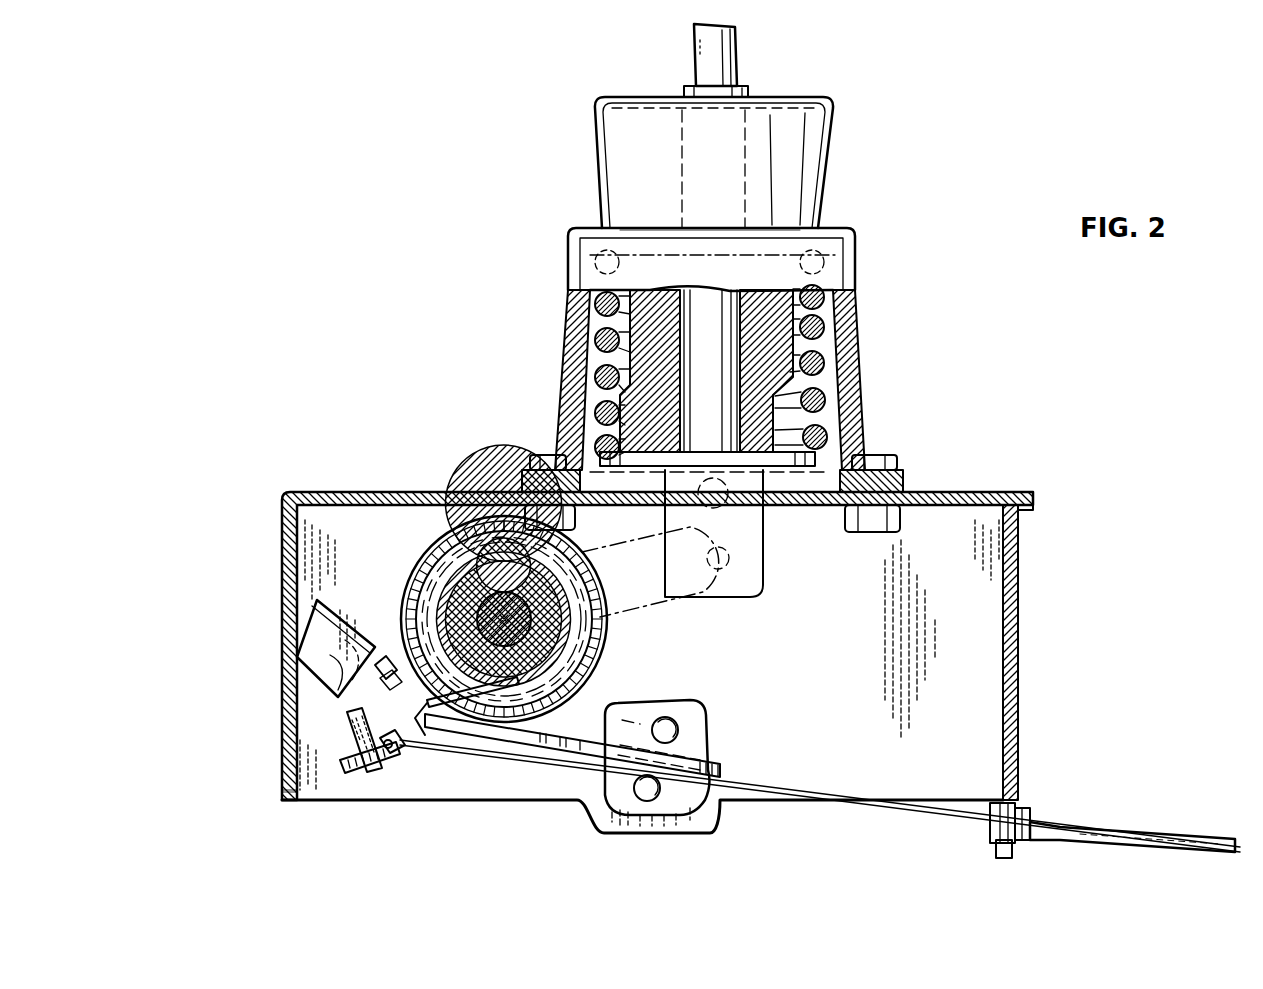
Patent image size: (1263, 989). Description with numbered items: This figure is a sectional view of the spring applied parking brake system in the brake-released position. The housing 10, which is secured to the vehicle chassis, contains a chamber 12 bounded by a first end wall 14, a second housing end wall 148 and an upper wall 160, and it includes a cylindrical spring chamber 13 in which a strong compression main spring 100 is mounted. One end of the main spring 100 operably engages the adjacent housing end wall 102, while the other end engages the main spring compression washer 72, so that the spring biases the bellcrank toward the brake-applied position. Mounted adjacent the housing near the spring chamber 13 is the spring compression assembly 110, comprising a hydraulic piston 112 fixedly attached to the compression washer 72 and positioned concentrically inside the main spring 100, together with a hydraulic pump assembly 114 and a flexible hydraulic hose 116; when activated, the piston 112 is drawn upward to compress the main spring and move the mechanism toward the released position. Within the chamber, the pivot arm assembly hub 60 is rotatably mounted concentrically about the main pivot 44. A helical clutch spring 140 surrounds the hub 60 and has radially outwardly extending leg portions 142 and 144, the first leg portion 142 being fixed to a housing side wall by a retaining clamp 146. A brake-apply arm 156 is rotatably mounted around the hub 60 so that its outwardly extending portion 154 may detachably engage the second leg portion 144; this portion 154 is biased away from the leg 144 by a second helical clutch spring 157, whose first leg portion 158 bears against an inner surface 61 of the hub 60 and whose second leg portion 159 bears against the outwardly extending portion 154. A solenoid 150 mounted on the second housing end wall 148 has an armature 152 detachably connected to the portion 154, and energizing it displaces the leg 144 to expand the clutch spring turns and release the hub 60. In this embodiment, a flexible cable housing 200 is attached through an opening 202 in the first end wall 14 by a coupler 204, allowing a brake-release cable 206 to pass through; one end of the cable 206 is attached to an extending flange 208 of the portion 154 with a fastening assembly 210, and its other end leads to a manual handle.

The housing 10 is at (283, 773).
The chamber 12 is at (975, 595).
The cylindrical spring chamber 13 is at (828, 388).
The first end wall 14 is at (1018, 648).
The main pivot 44 is at (590, 668).
The pivot arm assembly hub 60 is at (400, 590).
The inner surface 61 is at (418, 560).
The main spring compression washer 72 is at (825, 455).
The main spring 100 is at (825, 330).
The housing end wall 102 is at (592, 267).
The spring compression assembly 110 is at (585, 190).
The hydraulic piston 112 is at (690, 362).
The hydraulic pump assembly 114 is at (800, 100).
The flexible hydraulic hose 116 is at (740, 55).
The helical clutch spring 140 is at (605, 640).
The first leg portion 142 is at (563, 745).
The second leg portion 144 is at (343, 770).
The retaining clamp 146 is at (690, 728).
The second housing end wall 148 is at (310, 800).
The solenoid 150 is at (327, 652).
The armature 152 is at (327, 687).
The outwardly extending portion 154 is at (352, 713).
The brake-apply arm 156 is at (403, 617).
The second helical clutch spring 157 is at (588, 542).
The first leg portion 158 is at (477, 548).
The second leg portion 159 is at (483, 745).
The upper wall 160 is at (498, 500).
The flexible cable housing 200 is at (1157, 830).
The opening 202 is at (1020, 803).
The coupler 204 is at (1000, 845).
The brake-release cable 206 is at (890, 812).
The extending flange 208 is at (407, 760).
The fastening assembly 210 is at (393, 757).